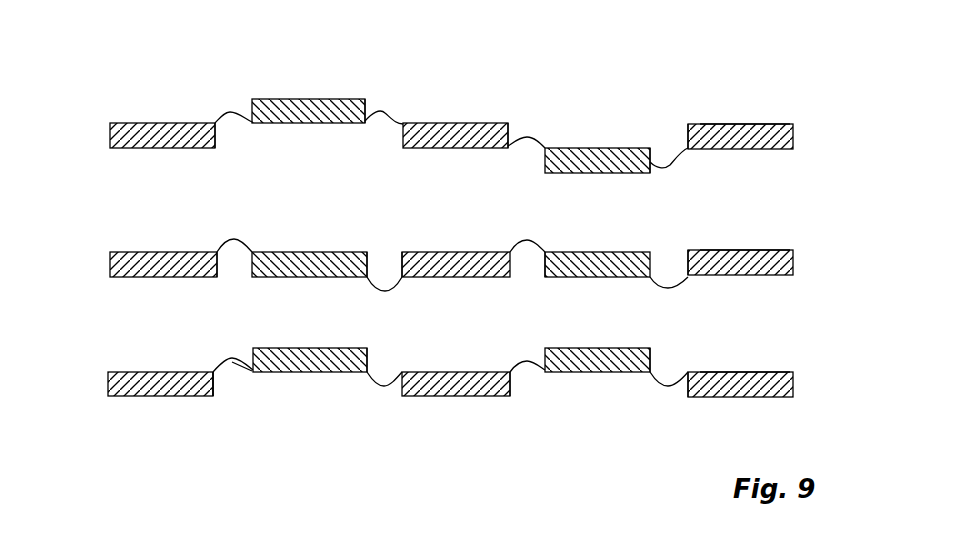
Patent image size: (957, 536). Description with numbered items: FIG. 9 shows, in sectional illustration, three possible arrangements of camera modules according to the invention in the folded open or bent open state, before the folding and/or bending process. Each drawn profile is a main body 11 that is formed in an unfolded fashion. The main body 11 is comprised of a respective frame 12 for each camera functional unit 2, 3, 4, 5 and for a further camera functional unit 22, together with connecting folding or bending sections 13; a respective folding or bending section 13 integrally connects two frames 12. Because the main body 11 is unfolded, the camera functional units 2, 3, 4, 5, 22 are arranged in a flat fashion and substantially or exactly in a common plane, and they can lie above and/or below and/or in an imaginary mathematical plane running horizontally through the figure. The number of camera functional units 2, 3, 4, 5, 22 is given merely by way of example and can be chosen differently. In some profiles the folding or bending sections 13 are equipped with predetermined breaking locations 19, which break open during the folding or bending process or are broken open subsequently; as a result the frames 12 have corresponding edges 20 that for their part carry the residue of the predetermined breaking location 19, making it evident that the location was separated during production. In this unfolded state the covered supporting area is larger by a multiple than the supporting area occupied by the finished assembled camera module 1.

The camera module 1 is at (90, 120).
The camera functional unit 2 is at (158, 98).
The camera functional unit 3 is at (300, 84).
The camera functional unit 4 is at (457, 108).
The camera functional unit 5 is at (740, 106).
The main body 11 is at (770, 136).
The frame 12 is at (363, 97).
The folding or bending section 13 is at (230, 112).
The predetermined breaking location 19 is at (242, 378).
The edge 20 is at (215, 377).
The further camera functional unit 22 is at (605, 118).